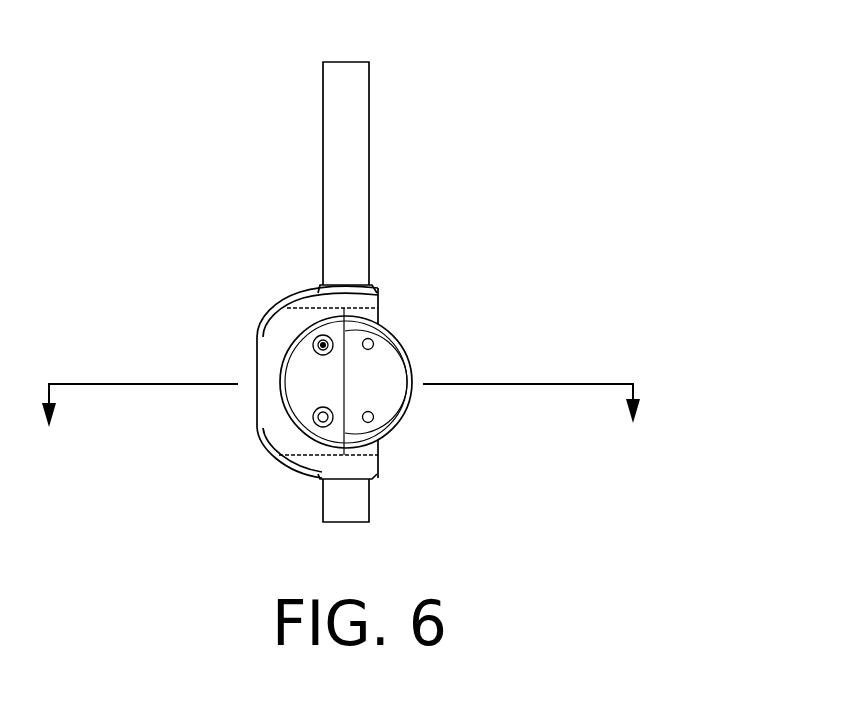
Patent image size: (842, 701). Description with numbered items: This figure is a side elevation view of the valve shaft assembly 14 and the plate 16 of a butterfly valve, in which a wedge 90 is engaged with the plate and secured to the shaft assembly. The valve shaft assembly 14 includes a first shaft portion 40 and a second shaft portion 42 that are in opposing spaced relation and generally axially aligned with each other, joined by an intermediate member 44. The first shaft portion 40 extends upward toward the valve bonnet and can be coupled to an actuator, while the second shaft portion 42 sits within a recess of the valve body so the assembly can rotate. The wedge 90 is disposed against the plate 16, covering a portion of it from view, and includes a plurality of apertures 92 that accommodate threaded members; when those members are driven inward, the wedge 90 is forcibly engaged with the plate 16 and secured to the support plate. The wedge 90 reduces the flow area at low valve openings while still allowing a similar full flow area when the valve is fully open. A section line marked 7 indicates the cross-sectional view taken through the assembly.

The valve shaft assembly 14 is at (502, 124).
The plate 16 is at (400, 345).
The first shaft portion 40 is at (369, 186).
The second shaft portion 42 is at (369, 497).
The intermediate member 44 is at (257, 352).
The wedge 90 is at (300, 391).
The apertures 92 is at (324, 347).
The section line 7- 7 is at (342, 424).